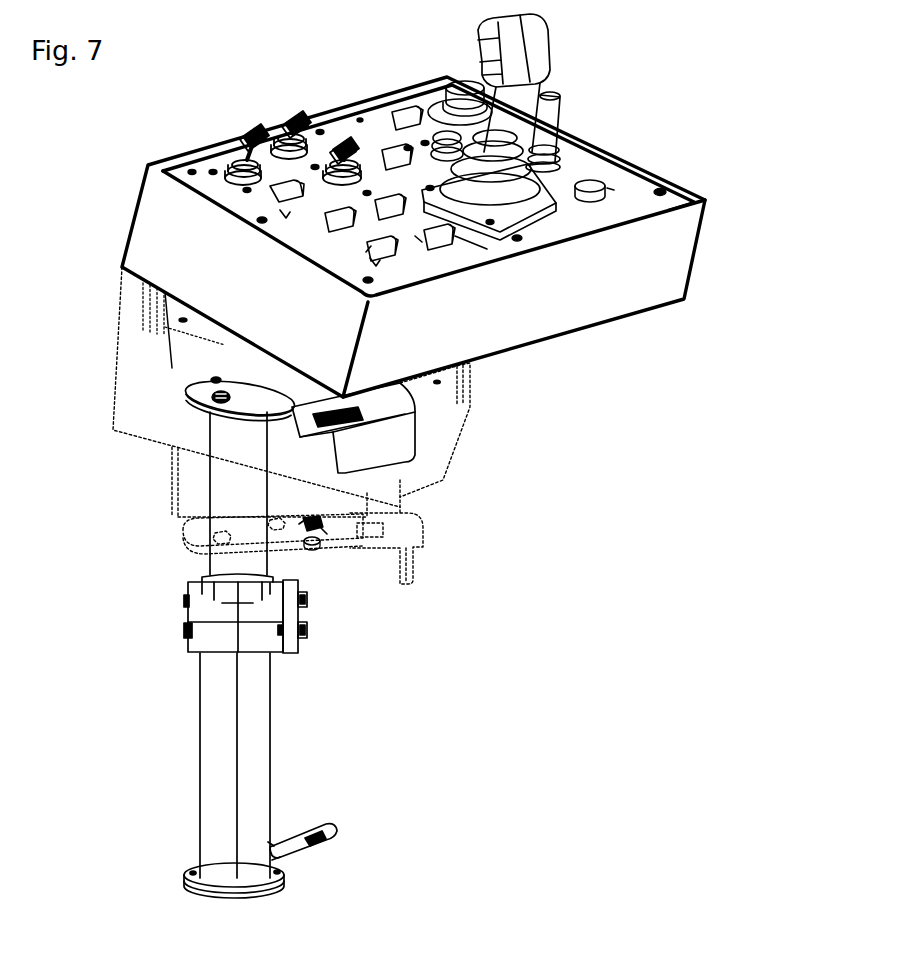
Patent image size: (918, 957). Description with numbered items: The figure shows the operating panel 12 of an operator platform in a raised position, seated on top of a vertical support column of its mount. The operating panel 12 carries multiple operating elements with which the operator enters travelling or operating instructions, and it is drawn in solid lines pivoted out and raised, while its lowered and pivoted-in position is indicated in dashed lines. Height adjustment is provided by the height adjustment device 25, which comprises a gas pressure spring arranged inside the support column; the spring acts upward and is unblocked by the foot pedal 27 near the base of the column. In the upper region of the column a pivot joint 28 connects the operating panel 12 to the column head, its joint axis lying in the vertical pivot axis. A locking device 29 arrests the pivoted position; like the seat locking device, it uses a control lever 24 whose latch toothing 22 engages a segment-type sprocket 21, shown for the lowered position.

The operating panel 12 is at (673, 263).
The segment-type sprocket 21 is at (296, 524).
The latch toothing 22 is at (311, 522).
The control lever 24 is at (417, 537).
The height adjustment device 25 is at (155, 686).
The foot pedal 27 is at (338, 836).
The pivot joint 28 is at (185, 398).
The locking device 29 is at (313, 544).